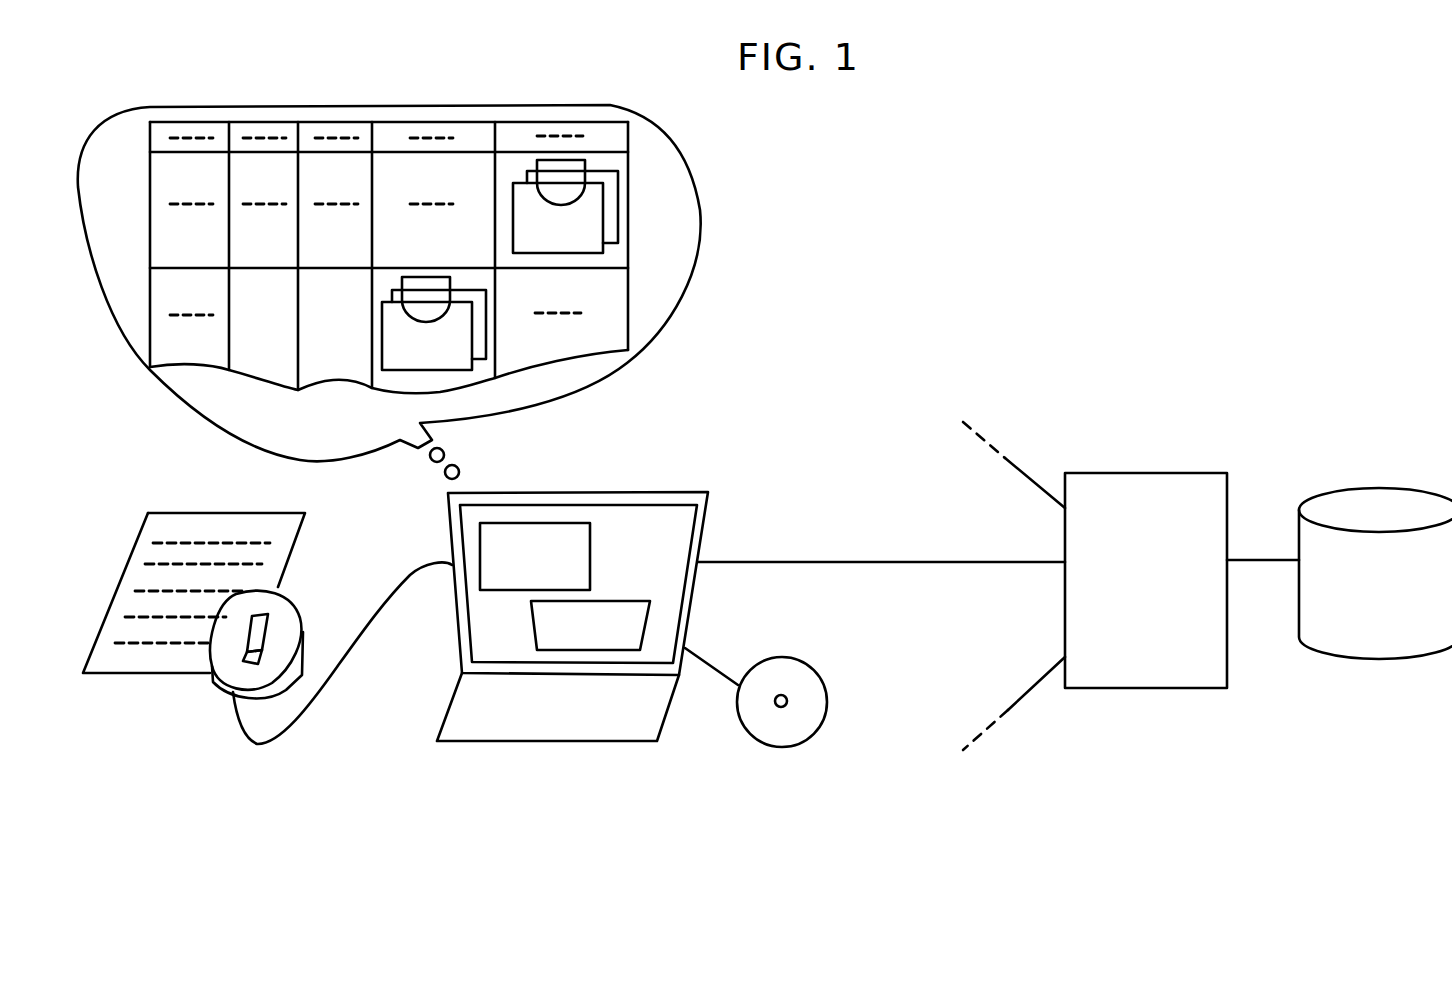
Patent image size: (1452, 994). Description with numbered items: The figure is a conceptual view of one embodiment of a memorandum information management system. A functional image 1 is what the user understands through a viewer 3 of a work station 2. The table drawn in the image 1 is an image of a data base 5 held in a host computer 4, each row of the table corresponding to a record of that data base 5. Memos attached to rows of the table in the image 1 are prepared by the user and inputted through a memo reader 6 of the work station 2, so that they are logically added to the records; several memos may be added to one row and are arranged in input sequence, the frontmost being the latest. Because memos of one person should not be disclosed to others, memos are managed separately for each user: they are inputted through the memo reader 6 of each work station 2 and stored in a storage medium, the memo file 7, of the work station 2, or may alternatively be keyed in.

The functional image 1 is at (685, 158).
The work station 2 is at (604, 675).
The viewer 3 is at (668, 533).
The host computer 4 is at (1142, 473).
The data base 5 is at (1365, 488).
The memo reader 6 is at (220, 687).
The storage medium (memo file) 7 is at (808, 727).